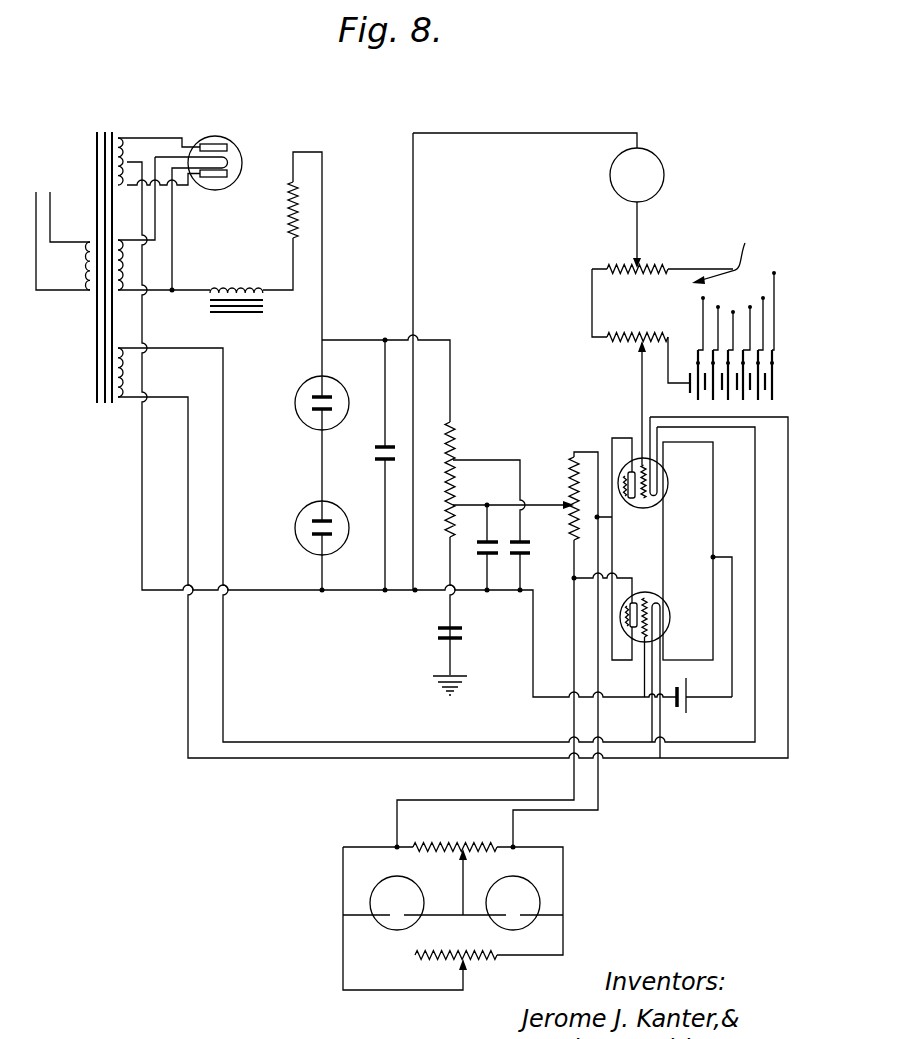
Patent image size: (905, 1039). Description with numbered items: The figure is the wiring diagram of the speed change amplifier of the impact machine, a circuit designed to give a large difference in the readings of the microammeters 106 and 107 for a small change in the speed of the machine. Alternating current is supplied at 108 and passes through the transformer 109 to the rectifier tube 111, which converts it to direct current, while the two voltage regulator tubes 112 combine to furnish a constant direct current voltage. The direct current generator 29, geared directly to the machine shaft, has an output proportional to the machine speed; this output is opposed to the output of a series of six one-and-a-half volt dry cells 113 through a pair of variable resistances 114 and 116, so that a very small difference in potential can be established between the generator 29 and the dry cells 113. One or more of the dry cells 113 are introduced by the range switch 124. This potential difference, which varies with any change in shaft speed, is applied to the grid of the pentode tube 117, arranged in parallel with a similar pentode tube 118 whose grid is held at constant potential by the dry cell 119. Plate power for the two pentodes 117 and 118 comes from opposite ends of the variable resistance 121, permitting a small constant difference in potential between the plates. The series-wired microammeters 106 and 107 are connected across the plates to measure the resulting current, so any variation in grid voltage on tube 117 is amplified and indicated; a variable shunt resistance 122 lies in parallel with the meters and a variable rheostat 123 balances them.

The direct current generator 29 is at (656, 160).
The microammeter 106 is at (371, 903).
The microammeter 107 is at (536, 897).
The alternating current supply 108 is at (45, 172).
The transformer 109 is at (107, 130).
The rectifier tube 111 is at (205, 137).
The voltage regulator tubes 112 is at (296, 402).
The dry cells 113 is at (733, 397).
The variable resistance 114 is at (645, 268).
The variable resistance 116 is at (625, 348).
The pentode tube 117 is at (652, 503).
The pentode tube 118 is at (660, 608).
The dry cell 119 is at (690, 703).
The variable resistance 121 is at (570, 472).
The variable shunt resistance 122 is at (477, 962).
The variable rheostat 123 is at (448, 828).
The range switch 124 is at (731, 256).